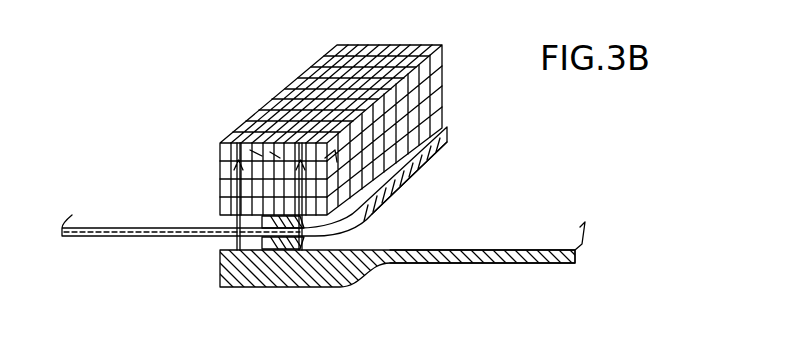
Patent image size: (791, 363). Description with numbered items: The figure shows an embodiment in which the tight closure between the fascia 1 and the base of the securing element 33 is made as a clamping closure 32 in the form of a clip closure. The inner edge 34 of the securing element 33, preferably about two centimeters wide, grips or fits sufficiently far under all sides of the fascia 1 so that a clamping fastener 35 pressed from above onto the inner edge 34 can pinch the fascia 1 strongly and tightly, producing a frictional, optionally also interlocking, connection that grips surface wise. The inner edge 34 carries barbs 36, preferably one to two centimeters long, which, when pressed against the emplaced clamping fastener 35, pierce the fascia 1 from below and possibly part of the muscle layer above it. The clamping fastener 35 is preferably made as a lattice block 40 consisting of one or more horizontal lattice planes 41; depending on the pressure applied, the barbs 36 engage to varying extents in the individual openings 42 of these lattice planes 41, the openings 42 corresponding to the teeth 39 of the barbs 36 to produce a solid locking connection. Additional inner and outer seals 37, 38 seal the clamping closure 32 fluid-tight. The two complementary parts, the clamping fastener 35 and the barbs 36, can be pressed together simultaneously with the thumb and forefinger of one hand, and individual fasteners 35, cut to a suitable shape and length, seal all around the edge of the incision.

The fascia 1 is at (446, 130).
The clamping closure 32 is at (442, 60).
The securing element 33 is at (503, 262).
The inner edge 34 is at (265, 283).
The clamping fastener 35 is at (318, 78).
The barbs 36 is at (262, 222).
The inner seal 37 is at (302, 244).
The outer seal 38 is at (348, 212).
The teeth of barbs 39 is at (230, 175).
The lattice block 40 is at (430, 98).
The lattice planes 41 is at (260, 127).
The openings 42 is at (402, 163).